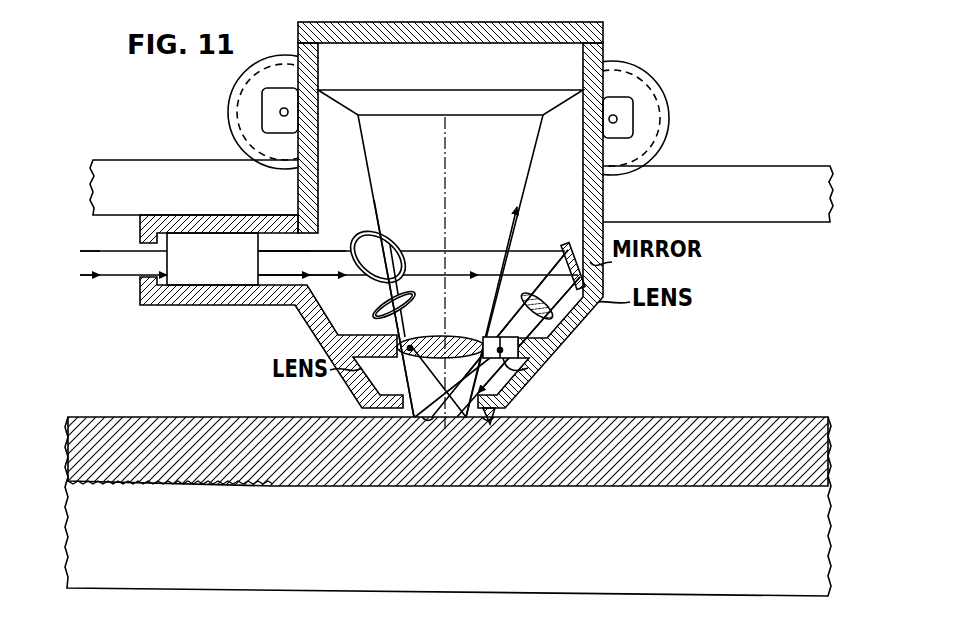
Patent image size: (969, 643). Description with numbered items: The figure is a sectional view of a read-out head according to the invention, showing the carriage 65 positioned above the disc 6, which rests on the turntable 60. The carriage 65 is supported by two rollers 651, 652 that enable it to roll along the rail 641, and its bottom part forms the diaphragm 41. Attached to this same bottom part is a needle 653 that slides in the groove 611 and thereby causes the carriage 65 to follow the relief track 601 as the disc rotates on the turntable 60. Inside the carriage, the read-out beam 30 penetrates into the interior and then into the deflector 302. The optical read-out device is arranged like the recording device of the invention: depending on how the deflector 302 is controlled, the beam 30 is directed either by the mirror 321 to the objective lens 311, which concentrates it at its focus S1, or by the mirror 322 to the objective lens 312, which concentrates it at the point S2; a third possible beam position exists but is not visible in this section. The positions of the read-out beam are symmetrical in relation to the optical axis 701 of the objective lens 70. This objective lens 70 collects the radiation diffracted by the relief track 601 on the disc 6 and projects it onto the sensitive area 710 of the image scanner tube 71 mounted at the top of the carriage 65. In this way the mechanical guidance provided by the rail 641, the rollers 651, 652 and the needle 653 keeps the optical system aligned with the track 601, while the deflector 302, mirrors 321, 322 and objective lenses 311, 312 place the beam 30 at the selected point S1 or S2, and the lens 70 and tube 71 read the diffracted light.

The disc 6 is at (162, 452).
The turntable 60 is at (203, 517).
The relief track 601 is at (428, 420).
The groove 611 is at (673, 423).
The read-out beam 30 is at (118, 258).
The deflector 302 is at (232, 265).
The objective lens 312 is at (380, 316).
The mirror 322 is at (390, 243).
The mirror 321 is at (563, 247).
The objective lens 311 is at (567, 322).
The objective lens 70 is at (455, 336).
The optical axis 701 is at (448, 255).
The image scanner tube 71 is at (522, 72).
The sensitive area 710 is at (472, 116).
The carriage 65 is at (338, 205).
The roller 651 is at (232, 133).
The roller 652 is at (667, 143).
The rail 641 is at (123, 178).
The diaphragm 41 is at (392, 408).
The needle 653 is at (494, 413).
The focus S1 is at (520, 356).
The point S2 is at (412, 346).